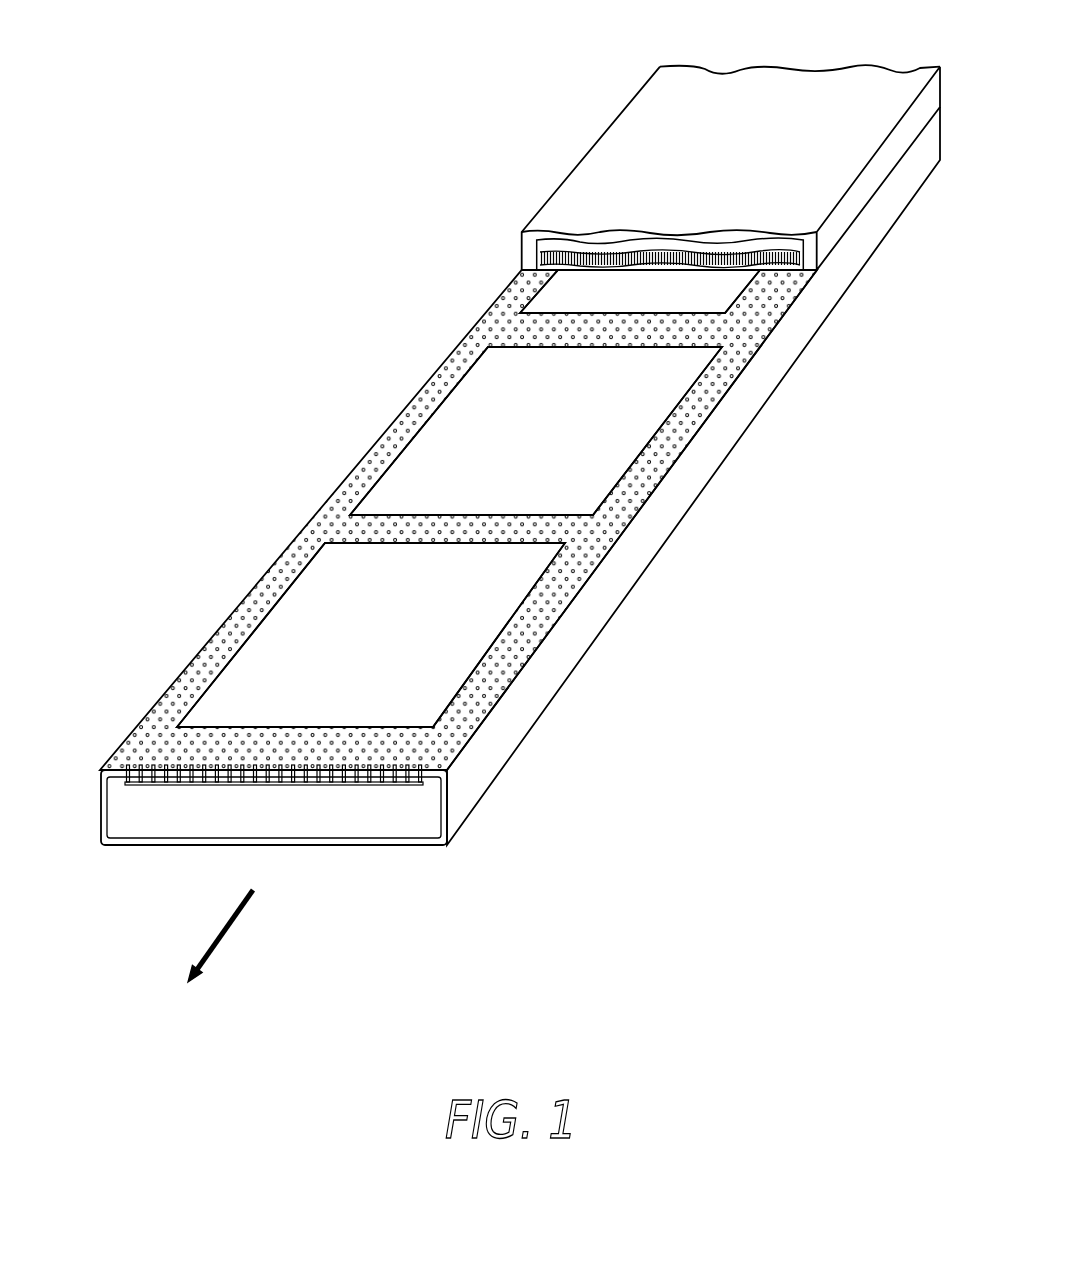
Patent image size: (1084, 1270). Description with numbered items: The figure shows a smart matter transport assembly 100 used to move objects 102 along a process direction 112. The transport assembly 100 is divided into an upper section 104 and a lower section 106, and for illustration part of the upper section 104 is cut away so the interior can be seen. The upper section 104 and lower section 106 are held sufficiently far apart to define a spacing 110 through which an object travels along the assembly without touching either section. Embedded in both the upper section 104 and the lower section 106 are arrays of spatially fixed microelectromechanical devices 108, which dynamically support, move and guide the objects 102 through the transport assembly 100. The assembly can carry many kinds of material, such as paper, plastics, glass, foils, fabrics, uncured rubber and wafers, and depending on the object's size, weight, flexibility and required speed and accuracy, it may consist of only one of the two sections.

The transport assembly 100 is at (538, 80).
The objects 102 is at (698, 285).
The upper section 104 is at (625, 163).
The lower section 106 is at (863, 232).
The microelectromechanical devices 108 is at (445, 747).
The spacing 110 is at (793, 272).
The process direction 112 is at (210, 948).